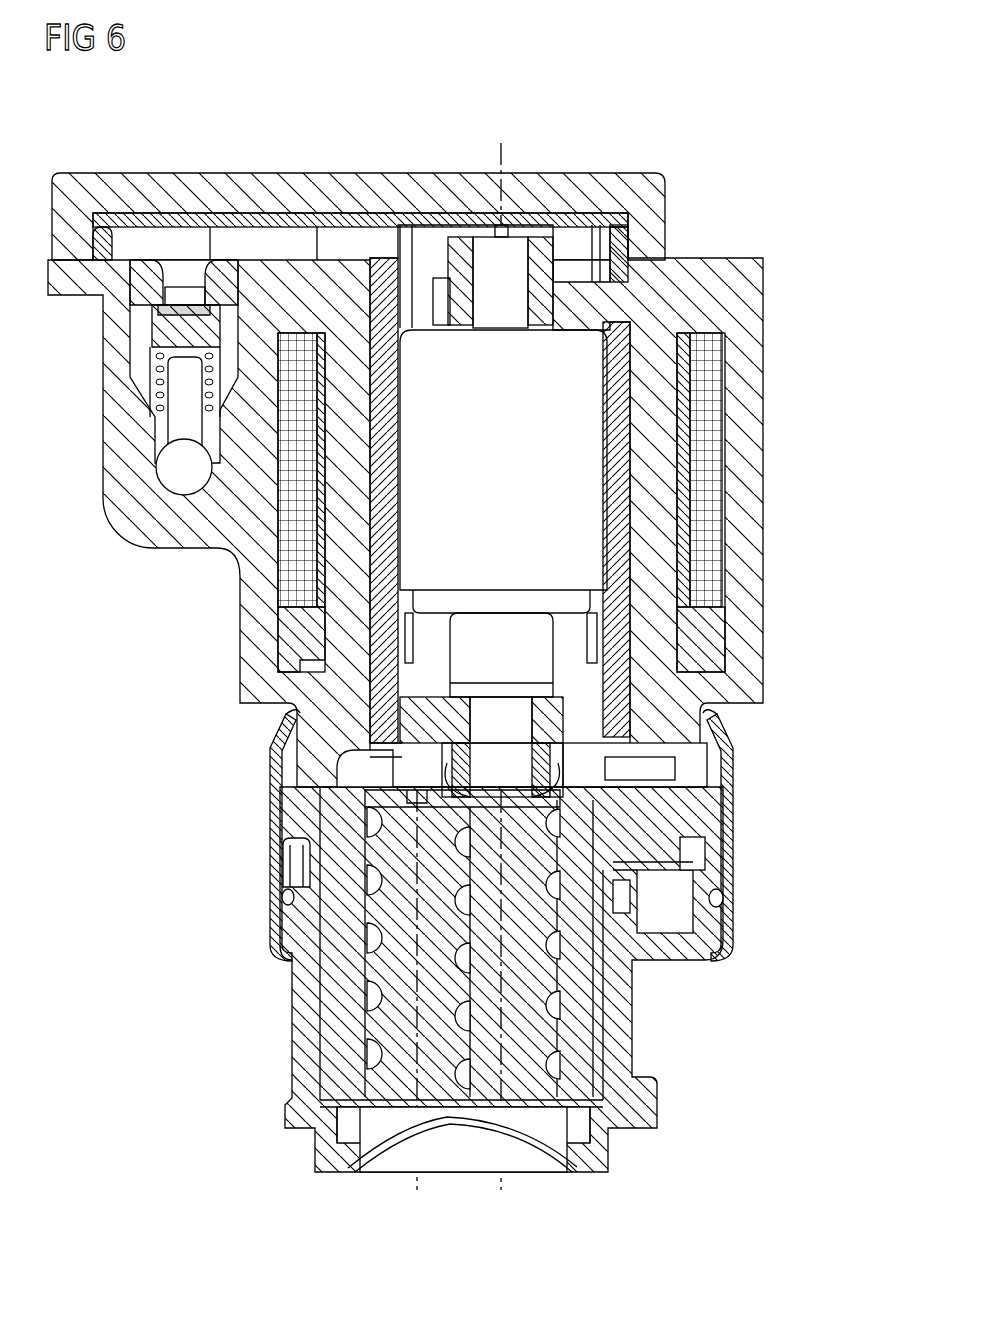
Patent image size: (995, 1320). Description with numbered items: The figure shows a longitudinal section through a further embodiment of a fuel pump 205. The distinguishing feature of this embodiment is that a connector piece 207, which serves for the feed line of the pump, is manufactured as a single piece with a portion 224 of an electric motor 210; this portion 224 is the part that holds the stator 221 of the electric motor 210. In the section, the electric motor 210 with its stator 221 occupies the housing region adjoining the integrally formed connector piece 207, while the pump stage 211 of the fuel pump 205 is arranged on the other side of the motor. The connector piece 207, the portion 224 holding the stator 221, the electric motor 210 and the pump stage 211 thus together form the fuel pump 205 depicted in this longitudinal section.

The fuel pump 205 is at (751, 239).
The connector piece 207 is at (183, 478).
The electric motor 210 is at (737, 374).
The stator 221 is at (727, 462).
The portion 224 is at (742, 677).
The pump stage 211 is at (739, 801).